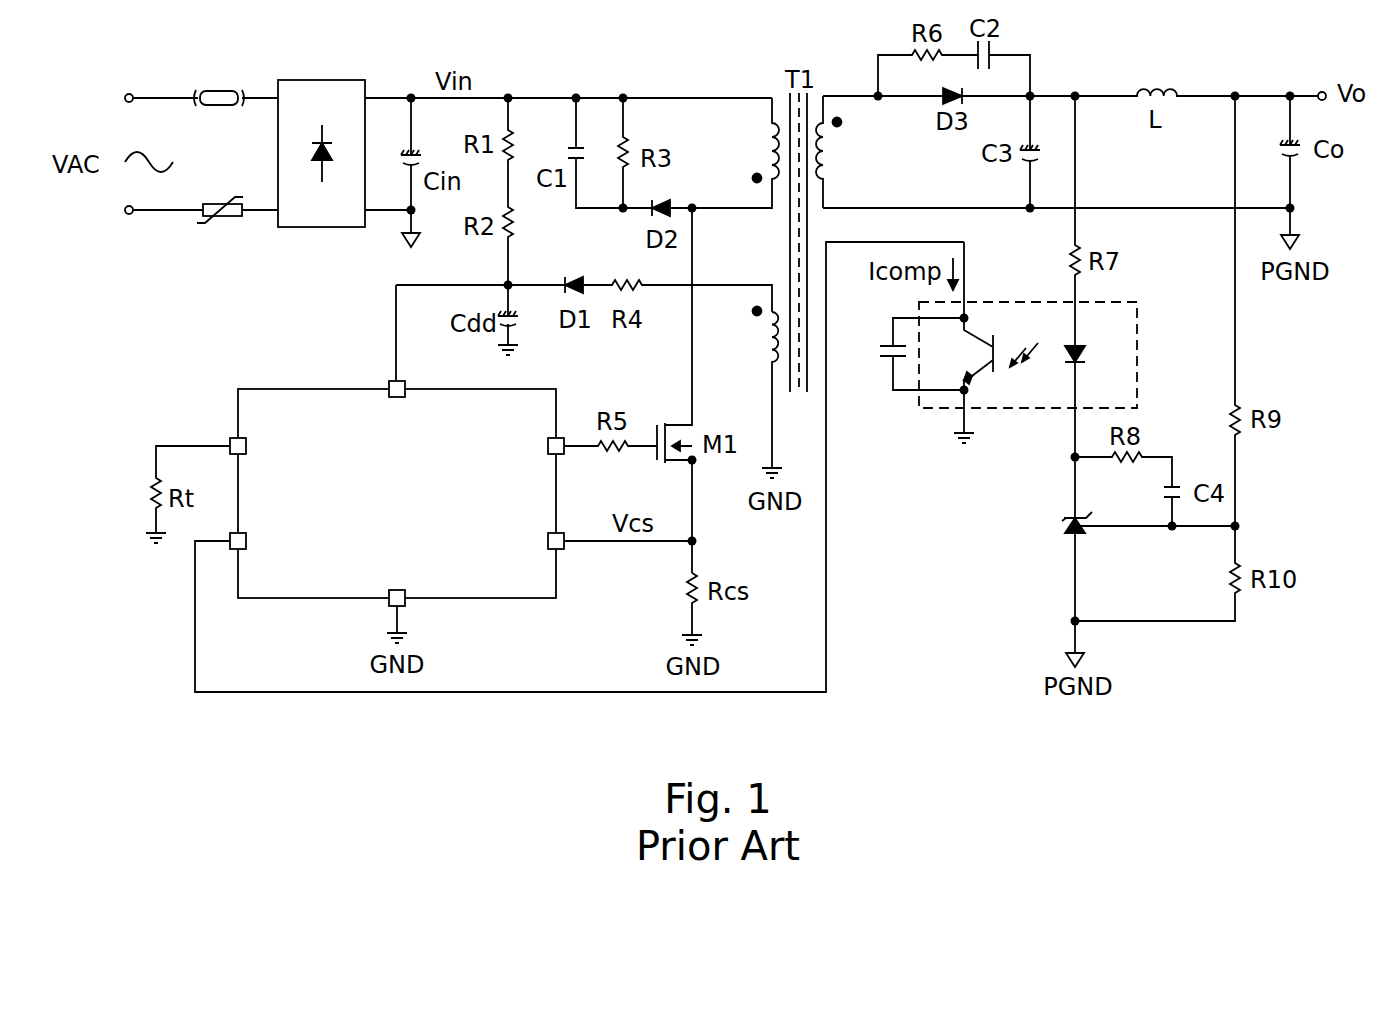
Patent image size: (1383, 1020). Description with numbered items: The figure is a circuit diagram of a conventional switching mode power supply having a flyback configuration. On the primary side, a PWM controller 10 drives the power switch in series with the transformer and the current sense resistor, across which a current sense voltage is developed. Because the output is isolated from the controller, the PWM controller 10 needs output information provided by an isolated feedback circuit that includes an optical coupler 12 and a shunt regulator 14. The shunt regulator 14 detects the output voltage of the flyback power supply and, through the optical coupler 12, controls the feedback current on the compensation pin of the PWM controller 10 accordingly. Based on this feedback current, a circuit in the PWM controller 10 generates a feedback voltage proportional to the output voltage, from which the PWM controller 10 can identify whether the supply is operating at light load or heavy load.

The PWM controller 10 is at (311, 389).
The optical coupler 12 is at (1022, 302).
The shunt regulator 14 is at (1065, 524).